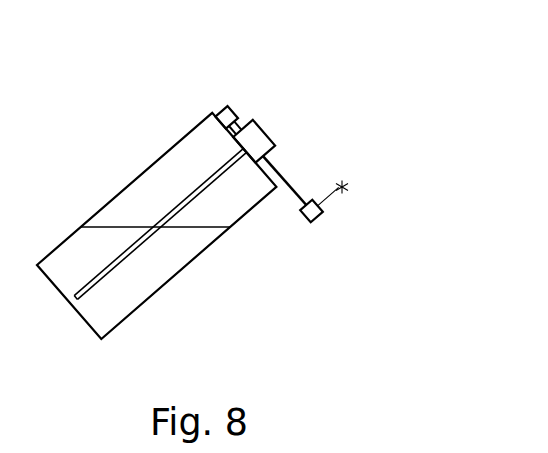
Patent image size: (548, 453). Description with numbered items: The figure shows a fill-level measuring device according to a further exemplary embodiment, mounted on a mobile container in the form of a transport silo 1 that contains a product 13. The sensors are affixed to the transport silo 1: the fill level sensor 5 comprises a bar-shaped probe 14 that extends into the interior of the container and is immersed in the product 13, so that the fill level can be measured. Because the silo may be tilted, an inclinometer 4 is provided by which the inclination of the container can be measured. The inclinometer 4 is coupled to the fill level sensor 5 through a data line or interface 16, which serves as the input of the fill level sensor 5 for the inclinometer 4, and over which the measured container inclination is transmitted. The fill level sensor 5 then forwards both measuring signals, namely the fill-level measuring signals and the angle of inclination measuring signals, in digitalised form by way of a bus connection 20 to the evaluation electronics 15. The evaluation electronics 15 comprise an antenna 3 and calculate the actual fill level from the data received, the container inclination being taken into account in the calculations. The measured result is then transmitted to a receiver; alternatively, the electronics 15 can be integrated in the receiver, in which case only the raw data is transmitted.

The transport silo 1 is at (236, 228).
The product 13 is at (142, 283).
The bar-shaped probe 14 is at (186, 195).
The inclinometer 4 is at (233, 111).
The interface 16 is at (240, 126).
The fill level sensor 5 is at (265, 134).
The bus connection 20 is at (282, 173).
The antenna 3 is at (348, 190).
The evaluation electronics 15 is at (325, 213).